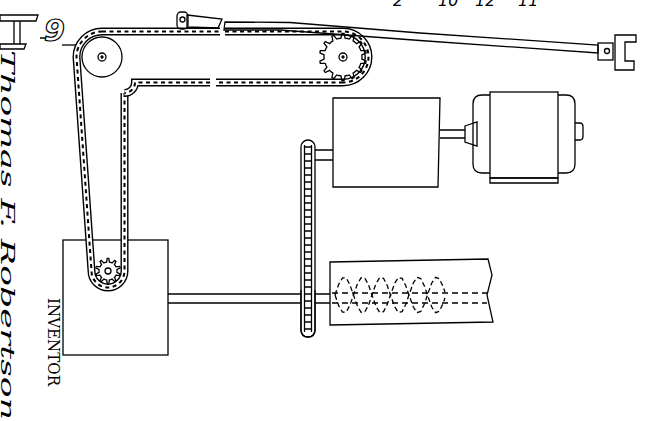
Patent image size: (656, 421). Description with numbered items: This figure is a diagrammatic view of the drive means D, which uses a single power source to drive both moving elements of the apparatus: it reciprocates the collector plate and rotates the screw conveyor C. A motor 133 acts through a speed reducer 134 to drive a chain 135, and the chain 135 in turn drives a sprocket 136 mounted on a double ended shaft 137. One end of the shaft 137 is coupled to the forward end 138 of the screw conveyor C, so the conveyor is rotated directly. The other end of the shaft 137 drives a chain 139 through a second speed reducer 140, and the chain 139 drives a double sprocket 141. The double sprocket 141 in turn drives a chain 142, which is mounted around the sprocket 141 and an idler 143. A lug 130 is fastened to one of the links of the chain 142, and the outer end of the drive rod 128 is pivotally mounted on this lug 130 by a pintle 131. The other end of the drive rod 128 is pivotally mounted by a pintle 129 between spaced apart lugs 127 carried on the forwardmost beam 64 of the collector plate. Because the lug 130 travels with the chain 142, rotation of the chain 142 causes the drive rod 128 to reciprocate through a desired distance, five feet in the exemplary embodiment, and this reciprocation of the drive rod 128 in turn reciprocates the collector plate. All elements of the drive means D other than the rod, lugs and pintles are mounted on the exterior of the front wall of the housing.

The forwardmost beam 64 is at (635, 39).
The lugs 127 is at (605, 42).
The drive rod 128 is at (466, 38).
The pintle 129 is at (607, 60).
The lug 130 is at (185, 29).
The pintle 131 is at (176, 16).
The motor 133 is at (527, 170).
The speed reducer 134 is at (419, 177).
The chain 135 is at (302, 204).
The sprocket 136 is at (304, 313).
The double ended shaft 137 is at (254, 300).
The forward end of screw conveyor 138 is at (325, 297).
The chain 139 is at (128, 174).
The speed reducer 140 is at (155, 265).
The double sprocket 141 is at (87, 60).
The chain 142 is at (239, 89).
The idler 143 is at (357, 60).
The screw conveyor C is at (427, 268).
The drive means D is at (233, 186).